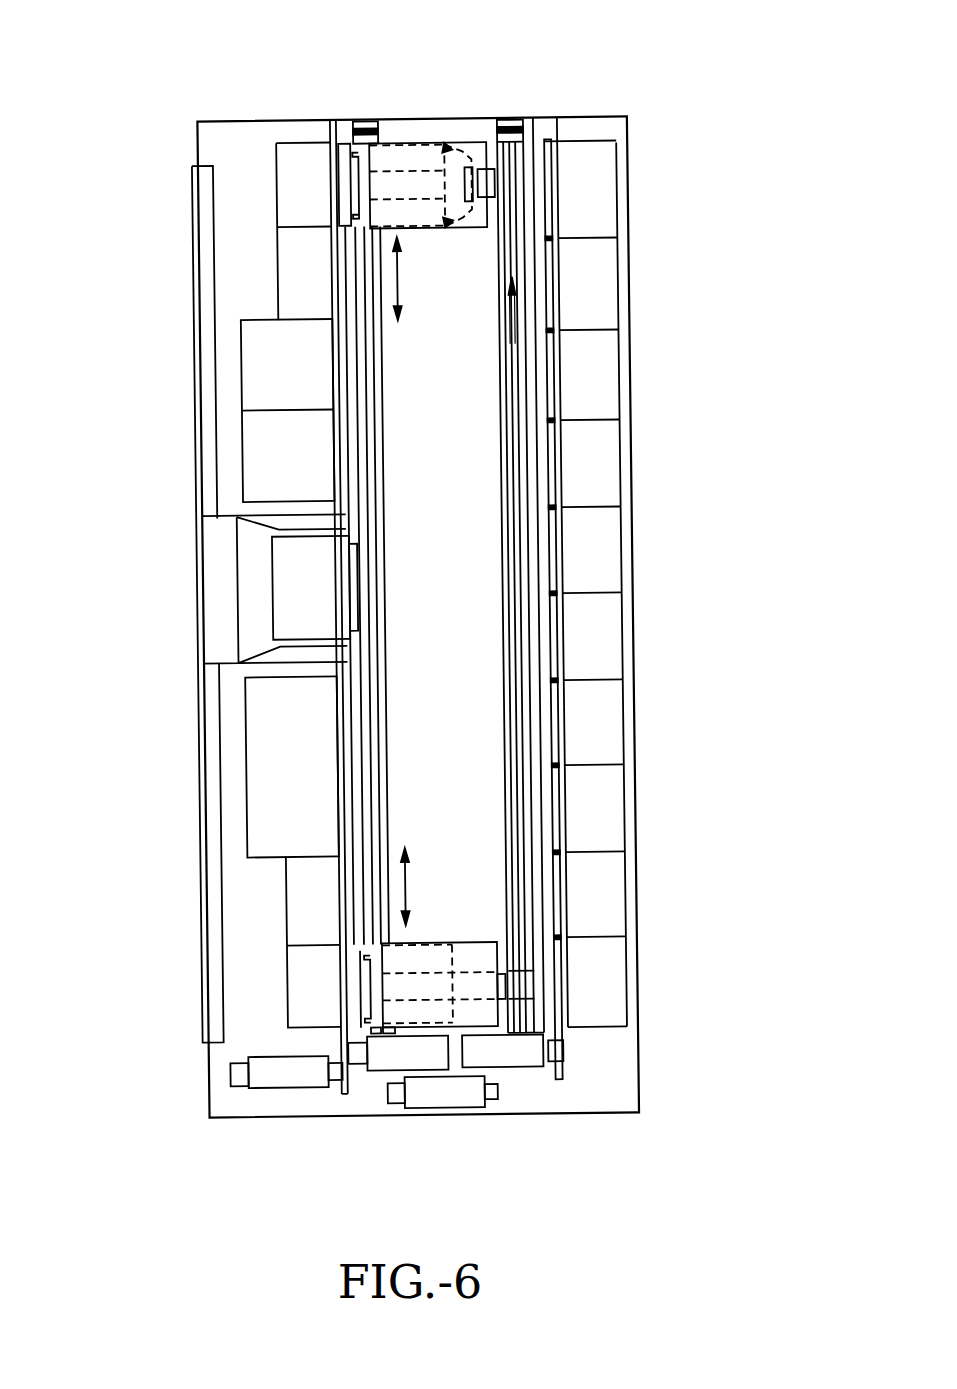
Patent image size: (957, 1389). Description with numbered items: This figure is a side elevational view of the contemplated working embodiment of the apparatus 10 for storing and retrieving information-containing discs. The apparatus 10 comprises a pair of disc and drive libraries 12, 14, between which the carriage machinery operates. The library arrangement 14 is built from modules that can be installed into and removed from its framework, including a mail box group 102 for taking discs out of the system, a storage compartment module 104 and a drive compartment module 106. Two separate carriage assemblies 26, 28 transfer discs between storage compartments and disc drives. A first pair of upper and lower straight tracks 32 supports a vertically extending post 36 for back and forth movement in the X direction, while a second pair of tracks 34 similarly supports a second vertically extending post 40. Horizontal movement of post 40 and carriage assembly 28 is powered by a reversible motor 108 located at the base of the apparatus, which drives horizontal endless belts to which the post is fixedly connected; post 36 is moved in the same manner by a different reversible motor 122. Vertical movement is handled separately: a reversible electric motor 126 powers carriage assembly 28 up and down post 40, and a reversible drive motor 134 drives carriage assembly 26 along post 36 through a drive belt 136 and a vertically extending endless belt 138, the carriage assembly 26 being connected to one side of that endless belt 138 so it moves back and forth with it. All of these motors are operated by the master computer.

The apparatus for storing and retrieving information-containing discs 10 is at (716, 591).
The disc and drive library 12 is at (647, 462).
The disc and drive library 14 is at (154, 447).
The first carriage assembly 26 is at (417, 136).
The second carriage assembly 28 is at (455, 936).
The tracks 32 is at (514, 117).
The tracks 34 is at (377, 117).
The post 36 is at (515, 523).
The post 40 is at (372, 597).
The mail box group 102 is at (272, 603).
The storage compartment module 104 is at (284, 280).
The drive compartment module 106 is at (243, 378).
The reversible motor 108 is at (437, 1096).
The reversible motor 122 is at (272, 1075).
The reversible electric motor 126 is at (375, 1046).
The reversible drive motor 134 is at (499, 1047).
The drive belt 136 is at (555, 1049).
The vertically extending endless belt 138 is at (542, 636).